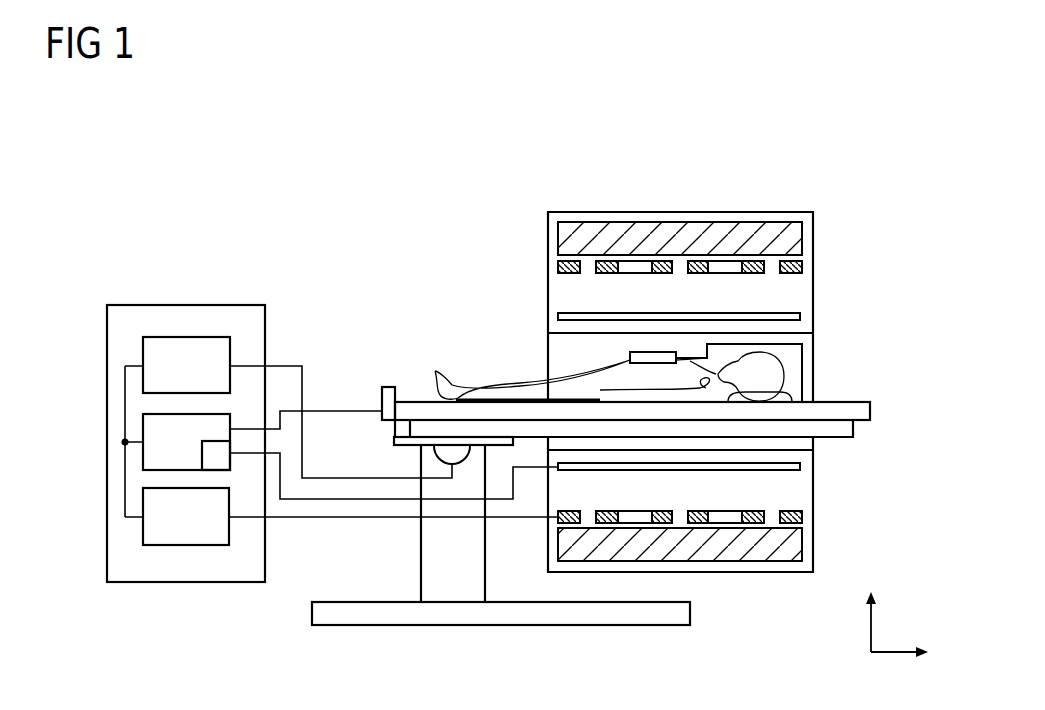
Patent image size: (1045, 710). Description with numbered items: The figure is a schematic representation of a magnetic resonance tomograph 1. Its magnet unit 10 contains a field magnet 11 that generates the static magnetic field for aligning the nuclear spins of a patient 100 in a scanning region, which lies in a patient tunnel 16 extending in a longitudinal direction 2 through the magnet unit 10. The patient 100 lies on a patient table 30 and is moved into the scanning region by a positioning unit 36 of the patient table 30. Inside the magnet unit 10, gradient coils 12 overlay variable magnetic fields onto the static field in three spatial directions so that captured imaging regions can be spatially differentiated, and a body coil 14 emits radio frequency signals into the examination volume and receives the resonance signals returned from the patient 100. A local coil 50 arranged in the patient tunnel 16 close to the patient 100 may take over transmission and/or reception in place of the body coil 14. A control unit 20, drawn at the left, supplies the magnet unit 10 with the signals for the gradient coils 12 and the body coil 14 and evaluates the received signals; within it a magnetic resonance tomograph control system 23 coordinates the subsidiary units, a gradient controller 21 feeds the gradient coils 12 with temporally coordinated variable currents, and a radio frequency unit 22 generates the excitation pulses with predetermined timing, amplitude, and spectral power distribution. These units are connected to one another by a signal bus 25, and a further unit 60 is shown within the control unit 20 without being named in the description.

The magnetic resonance tomograph 1 is at (530, 136).
The magnet unit 10 is at (810, 188).
The field magnet 11 is at (672, 226).
The gradient coils 12 is at (788, 262).
The body coil 14 is at (804, 316).
The patient tunnel 16 is at (852, 365).
The control unit 20 is at (230, 278).
The gradient controller 21 is at (187, 546).
The radio frequency unit 22 is at (143, 427).
The magnetic resonance tomograph control system 23 is at (185, 337).
The signal bus 25 is at (125, 480).
The patient table 30 is at (417, 402).
The positioning unit 36 is at (448, 462).
The local coil 50 is at (652, 352).
The position determining unit 60 is at (218, 462).
The patient 100 is at (478, 390).
The longitudinal direction 2 is at (890, 652).